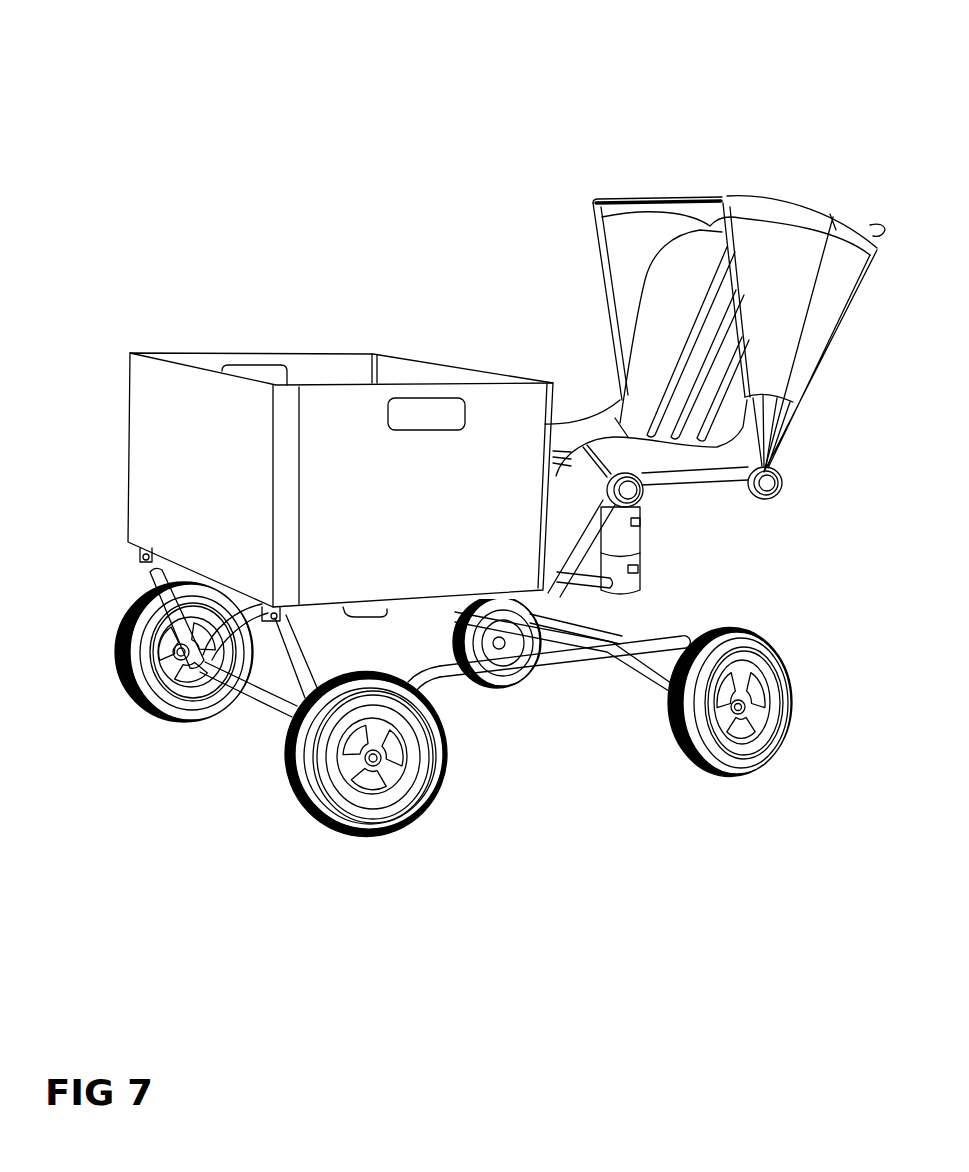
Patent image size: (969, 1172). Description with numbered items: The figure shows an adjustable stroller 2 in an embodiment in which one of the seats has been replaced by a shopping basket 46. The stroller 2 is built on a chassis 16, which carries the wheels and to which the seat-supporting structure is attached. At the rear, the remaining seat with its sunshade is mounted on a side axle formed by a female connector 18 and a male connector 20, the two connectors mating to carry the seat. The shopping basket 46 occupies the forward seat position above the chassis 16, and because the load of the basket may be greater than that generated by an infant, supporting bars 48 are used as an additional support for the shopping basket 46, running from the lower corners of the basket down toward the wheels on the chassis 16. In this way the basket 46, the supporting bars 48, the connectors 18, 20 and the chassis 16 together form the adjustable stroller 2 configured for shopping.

The adjustable stroller 2 is at (518, 112).
The chassis 16 is at (462, 670).
The female connector 18 is at (630, 587).
The male connector 20 is at (627, 537).
The shopping basket 46 is at (338, 407).
The supporting bar 48 is at (157, 575).